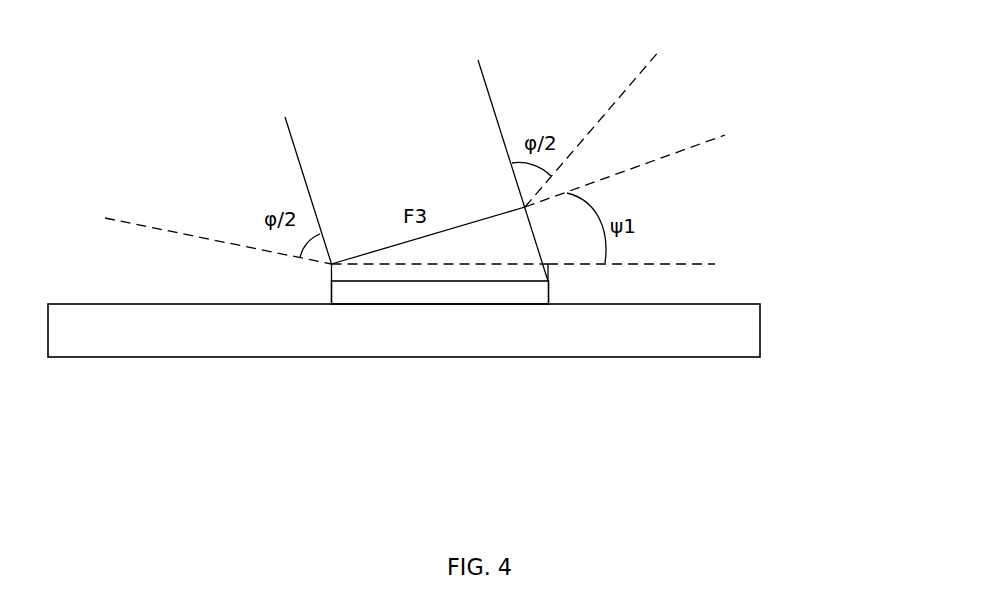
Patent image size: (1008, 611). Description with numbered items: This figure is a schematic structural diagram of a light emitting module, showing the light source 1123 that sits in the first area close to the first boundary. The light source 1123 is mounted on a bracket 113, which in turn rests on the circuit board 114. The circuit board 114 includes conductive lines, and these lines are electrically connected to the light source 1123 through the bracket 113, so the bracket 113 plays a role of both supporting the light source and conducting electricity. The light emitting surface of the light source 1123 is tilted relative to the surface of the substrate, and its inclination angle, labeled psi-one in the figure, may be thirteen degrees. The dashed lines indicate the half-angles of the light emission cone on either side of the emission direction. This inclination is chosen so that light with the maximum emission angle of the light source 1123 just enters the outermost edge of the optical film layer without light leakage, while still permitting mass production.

The circuit board 114 is at (757, 328).
The bracket 113 is at (487, 287).
The light source 1123 is at (421, 248).